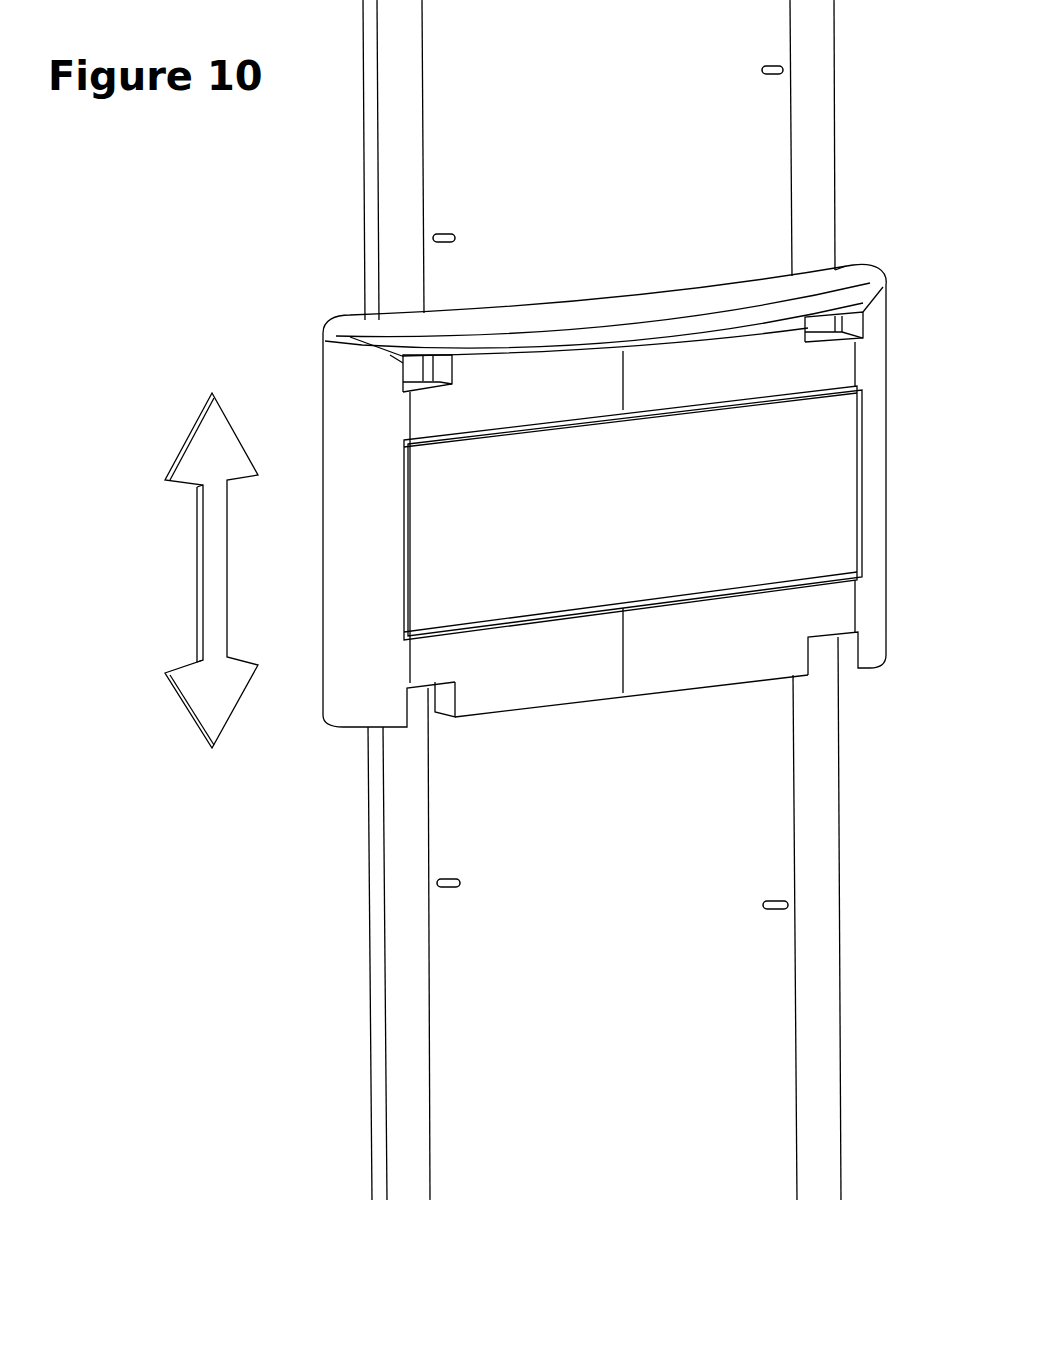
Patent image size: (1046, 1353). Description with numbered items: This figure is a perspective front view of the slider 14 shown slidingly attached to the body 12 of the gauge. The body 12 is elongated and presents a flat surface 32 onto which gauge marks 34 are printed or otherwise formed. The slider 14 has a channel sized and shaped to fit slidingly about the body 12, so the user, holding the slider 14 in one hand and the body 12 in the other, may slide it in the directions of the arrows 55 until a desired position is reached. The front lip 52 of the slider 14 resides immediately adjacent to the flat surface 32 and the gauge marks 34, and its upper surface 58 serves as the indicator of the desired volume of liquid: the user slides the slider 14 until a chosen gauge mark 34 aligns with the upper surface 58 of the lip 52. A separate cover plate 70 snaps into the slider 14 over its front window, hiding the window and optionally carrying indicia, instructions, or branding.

The body 12 is at (470, 1130).
The slider 14 is at (350, 392).
The flat surface 32 is at (455, 110).
The gauge marks 34 is at (582, 840).
The front lip 52 is at (762, 314).
The arrows 55 is at (210, 573).
The upper surface 58 is at (607, 312).
The cover plate 70 is at (630, 526).